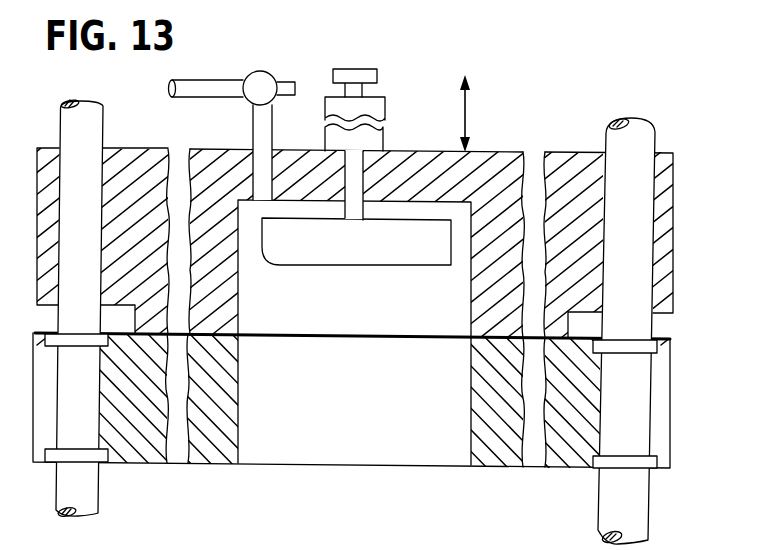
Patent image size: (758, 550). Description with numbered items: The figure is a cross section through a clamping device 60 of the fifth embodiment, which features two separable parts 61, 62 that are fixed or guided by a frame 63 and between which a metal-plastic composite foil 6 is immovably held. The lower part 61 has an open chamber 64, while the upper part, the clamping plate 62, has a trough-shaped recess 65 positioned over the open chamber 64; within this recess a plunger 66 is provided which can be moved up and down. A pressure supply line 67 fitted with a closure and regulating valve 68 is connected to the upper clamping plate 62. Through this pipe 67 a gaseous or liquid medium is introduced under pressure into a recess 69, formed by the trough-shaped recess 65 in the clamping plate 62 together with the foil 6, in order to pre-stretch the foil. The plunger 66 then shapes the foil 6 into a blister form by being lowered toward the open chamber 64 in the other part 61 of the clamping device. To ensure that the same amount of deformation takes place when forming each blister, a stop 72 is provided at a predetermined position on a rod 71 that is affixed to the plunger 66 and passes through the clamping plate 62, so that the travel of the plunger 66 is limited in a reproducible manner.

The metal-plastic composite foil 6 is at (270, 333).
The device 60 is at (381, 274).
The part 61 is at (660, 416).
The clamping plate 62 is at (660, 241).
The frame 63 is at (75, 493).
The open chamber 64 is at (385, 400).
The trough-shaped recess 65 is at (453, 213).
The plunger 66 is at (318, 240).
The pressure supply line 67 is at (259, 130).
The closure and regulating valve 68 is at (266, 72).
The recess 69 is at (367, 323).
The rod 71 is at (360, 92).
The stop 72 is at (357, 75).